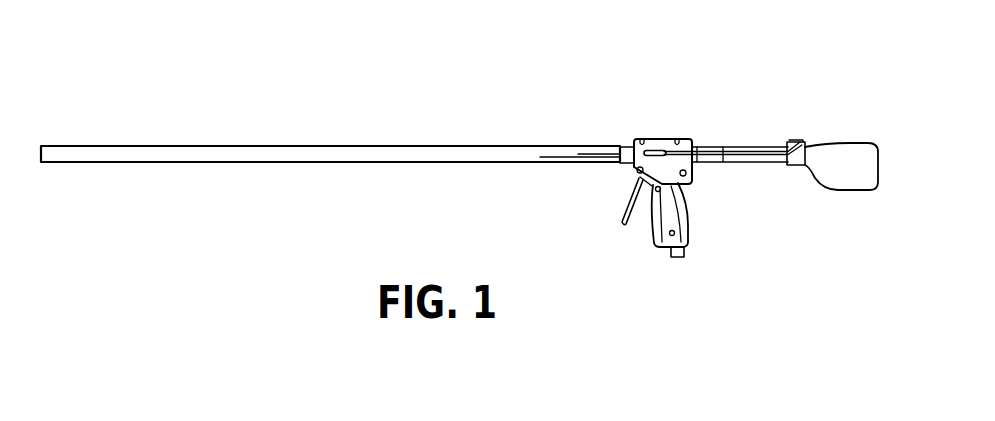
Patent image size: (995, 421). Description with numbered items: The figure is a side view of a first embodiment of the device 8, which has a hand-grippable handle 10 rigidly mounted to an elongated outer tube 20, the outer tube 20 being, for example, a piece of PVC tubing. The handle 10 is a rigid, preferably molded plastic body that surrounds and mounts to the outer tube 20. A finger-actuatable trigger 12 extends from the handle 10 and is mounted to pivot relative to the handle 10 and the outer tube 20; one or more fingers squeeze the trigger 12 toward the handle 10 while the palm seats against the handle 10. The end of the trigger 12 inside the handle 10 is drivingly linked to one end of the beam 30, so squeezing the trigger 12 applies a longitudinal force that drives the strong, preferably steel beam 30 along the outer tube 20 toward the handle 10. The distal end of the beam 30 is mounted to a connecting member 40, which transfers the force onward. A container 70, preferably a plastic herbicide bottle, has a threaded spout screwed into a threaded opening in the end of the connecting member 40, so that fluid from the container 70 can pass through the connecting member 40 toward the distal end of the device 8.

The device 8 is at (371, 119).
The handle 10 is at (688, 215).
The trigger 12 is at (631, 205).
The outer tube 20 is at (516, 156).
The beam 30 is at (745, 152).
The connecting member 40 is at (750, 150).
The container 70 is at (848, 170).